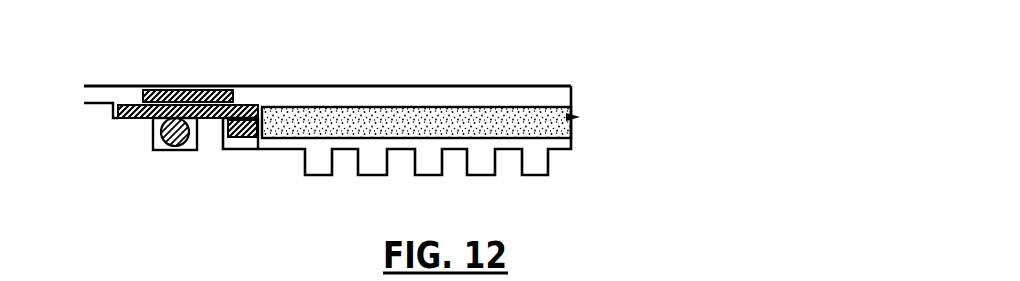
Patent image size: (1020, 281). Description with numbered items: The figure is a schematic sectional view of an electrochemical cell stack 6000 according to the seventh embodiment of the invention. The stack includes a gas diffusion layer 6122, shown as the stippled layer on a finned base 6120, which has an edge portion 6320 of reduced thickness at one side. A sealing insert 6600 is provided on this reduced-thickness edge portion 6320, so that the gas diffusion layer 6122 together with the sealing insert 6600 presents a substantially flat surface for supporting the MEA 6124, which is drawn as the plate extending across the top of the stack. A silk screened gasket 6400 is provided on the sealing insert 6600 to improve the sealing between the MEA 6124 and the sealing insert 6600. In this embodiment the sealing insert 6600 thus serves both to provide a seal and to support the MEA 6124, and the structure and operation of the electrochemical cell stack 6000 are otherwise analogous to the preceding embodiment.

The electrochemical cell stack 6000 is at (616, 117).
The finned base plate 6120 is at (550, 156).
The gas diffusion layer 6122 is at (431, 120).
The MEA 6124 is at (494, 86).
The edge portion 6320 is at (245, 130).
The silk screened gasket 6400 is at (195, 91).
The sealing insert 6600 is at (240, 112).